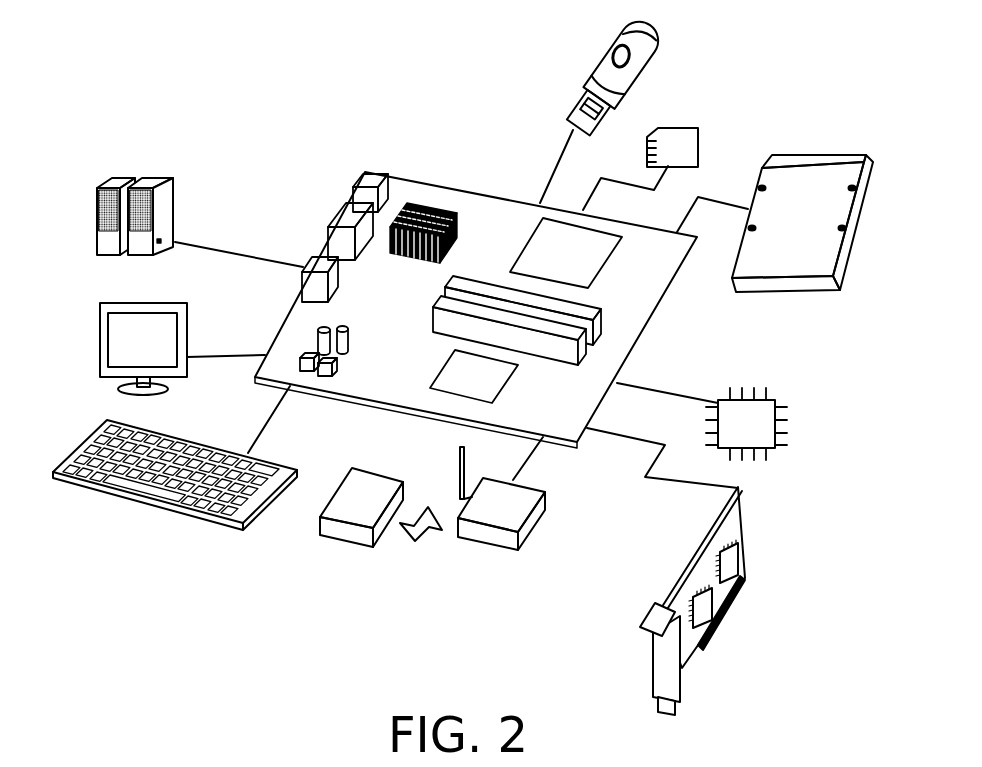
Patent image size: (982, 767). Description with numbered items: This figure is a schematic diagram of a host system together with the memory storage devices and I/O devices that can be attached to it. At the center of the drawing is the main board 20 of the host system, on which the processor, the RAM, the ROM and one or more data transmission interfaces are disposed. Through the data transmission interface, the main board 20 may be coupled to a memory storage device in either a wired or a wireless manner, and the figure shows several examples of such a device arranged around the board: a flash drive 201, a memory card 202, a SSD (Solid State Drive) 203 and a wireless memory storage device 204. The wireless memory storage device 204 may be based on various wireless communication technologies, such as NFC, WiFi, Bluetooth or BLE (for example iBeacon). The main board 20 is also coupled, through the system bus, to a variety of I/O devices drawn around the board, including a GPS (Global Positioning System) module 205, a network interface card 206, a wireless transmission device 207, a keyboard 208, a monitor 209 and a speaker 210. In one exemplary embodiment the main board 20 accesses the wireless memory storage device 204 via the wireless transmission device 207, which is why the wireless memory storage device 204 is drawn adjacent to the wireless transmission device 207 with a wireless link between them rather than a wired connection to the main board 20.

The main board 20 is at (478, 213).
The flash drive 201 is at (602, 65).
The memory card 202 is at (698, 137).
The SSD (Solid State Drive) 203 is at (818, 155).
The wireless memory storage device 204 is at (332, 483).
The GPS (Global Positioning System) module 205 is at (777, 423).
The network interface card 206 is at (743, 545).
The wireless transmission device 207 is at (538, 528).
The keyboard 208 is at (178, 512).
The monitor 209 is at (98, 357).
The speaker 210 is at (93, 242).